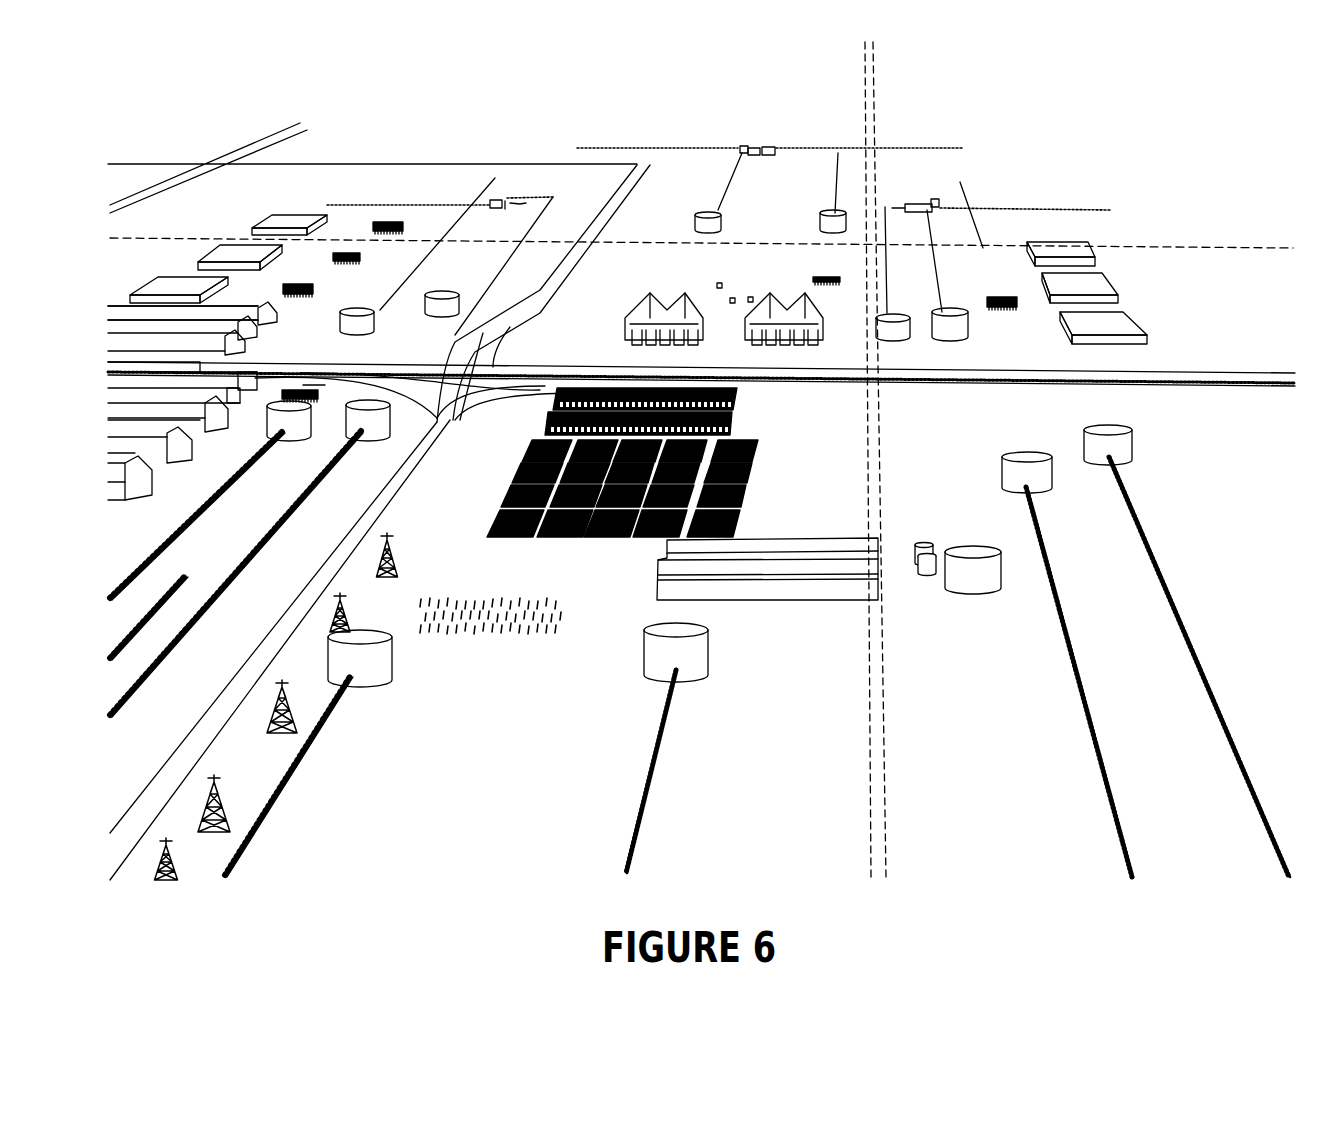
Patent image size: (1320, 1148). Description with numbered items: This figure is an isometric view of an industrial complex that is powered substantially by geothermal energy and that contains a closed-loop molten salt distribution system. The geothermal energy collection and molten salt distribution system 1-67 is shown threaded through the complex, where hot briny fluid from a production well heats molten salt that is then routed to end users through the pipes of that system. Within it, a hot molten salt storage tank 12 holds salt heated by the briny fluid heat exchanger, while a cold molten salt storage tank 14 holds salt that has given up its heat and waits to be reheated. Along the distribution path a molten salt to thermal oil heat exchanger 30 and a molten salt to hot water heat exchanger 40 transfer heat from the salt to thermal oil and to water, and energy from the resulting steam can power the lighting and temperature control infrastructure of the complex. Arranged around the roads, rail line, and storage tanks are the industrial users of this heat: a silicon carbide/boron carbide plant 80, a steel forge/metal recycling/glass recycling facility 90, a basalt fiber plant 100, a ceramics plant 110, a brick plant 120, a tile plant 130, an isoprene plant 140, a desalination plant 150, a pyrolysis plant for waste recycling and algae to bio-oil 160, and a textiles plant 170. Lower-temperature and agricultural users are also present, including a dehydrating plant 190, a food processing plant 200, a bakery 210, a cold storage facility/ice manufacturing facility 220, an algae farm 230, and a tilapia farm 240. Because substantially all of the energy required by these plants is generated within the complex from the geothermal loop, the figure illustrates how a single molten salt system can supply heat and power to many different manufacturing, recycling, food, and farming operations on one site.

The geothermal energy collection and molten salt distribution system 1-67 is at (505, 198).
The hot molten salt storage tank 12 is at (383, 433).
The cold molten salt storage tank 14 is at (301, 431).
The molten salt to thermal oil heat exchanger 30 is at (322, 289).
The molten salt to hot water heat exchanger 40 is at (368, 259).
The silicon carbide/boron carbide plant 80 is at (1082, 242).
The steel forge/metal recycling/glass recycling 90 is at (1099, 279).
The basalt fiber plant 100 is at (1125, 319).
The ceramics plant 110 is at (262, 378).
The brick plant 120 is at (282, 318).
The tile plant 130 is at (218, 423).
The isoprene plant 140 is at (184, 449).
The desalination plant 150 is at (180, 277).
The pyrolysis plant for waste recycling and algae to bio-oil 160 is at (656, 563).
The textiles plant 170 is at (138, 488).
The dehydrating plant 190 is at (240, 244).
The food processing plant 200 is at (759, 289).
The bakery 210 is at (648, 292).
The cold storage facility/ice manufacturing 220 is at (287, 213).
The algae farm 230 is at (757, 457).
The tilapia farm 240 is at (742, 400).